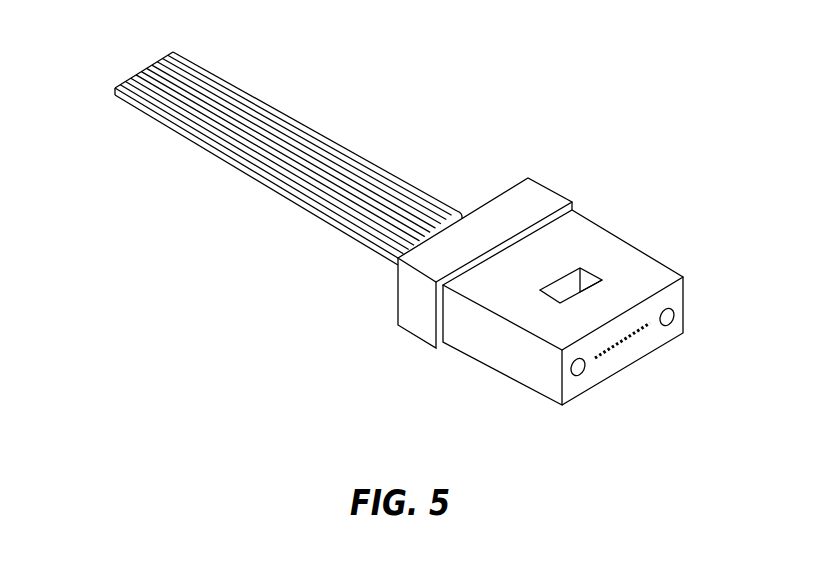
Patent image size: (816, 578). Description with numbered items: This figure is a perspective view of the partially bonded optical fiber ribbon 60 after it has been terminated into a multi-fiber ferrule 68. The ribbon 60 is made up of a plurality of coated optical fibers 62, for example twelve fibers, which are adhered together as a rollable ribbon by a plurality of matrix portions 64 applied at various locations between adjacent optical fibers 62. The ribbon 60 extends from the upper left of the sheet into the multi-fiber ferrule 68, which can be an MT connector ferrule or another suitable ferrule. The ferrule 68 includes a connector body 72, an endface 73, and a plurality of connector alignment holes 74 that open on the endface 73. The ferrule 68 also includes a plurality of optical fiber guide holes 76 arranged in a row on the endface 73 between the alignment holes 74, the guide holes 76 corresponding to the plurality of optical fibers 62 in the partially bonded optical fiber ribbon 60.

The partially bonded optical fiber ribbon 60 is at (598, 58).
The optical fibers 62 is at (203, 91).
The matrix portions 64 is at (315, 149).
The multi-fiber ferrule 68 is at (565, 309).
The connector body 72 is at (643, 267).
The endface 73 is at (667, 335).
The connector alignment holes 74 is at (673, 310).
The optical fiber guide holes 76 is at (623, 338).